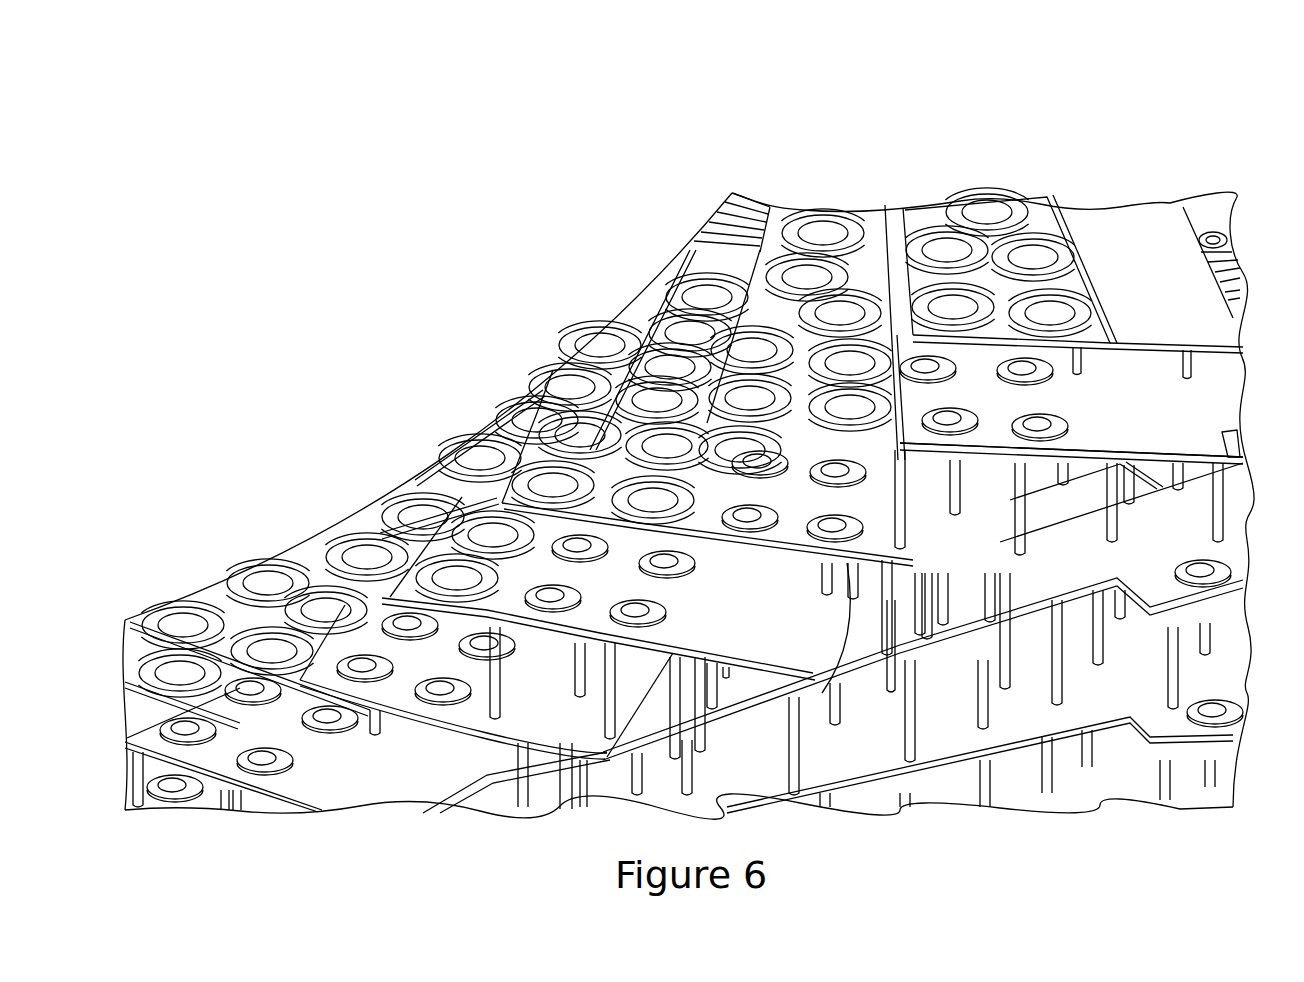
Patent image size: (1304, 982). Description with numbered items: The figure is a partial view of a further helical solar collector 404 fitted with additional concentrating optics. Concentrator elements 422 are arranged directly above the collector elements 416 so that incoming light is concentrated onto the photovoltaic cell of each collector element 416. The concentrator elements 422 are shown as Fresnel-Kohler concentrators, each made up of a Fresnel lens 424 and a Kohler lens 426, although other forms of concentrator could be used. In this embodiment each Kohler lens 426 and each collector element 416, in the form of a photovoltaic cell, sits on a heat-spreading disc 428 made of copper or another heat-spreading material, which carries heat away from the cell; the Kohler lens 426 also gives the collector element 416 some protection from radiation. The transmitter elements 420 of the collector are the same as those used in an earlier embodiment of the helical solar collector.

The helical solar collector 404 is at (400, 158).
The collector element 416 is at (952, 416).
The transmitter element 420 is at (997, 637).
The concentrator element 422 is at (862, 276).
The Fresnel lens 424 is at (952, 303).
The Kohler lens 426 is at (943, 415).
The heat-spreading disc 428 is at (962, 406).